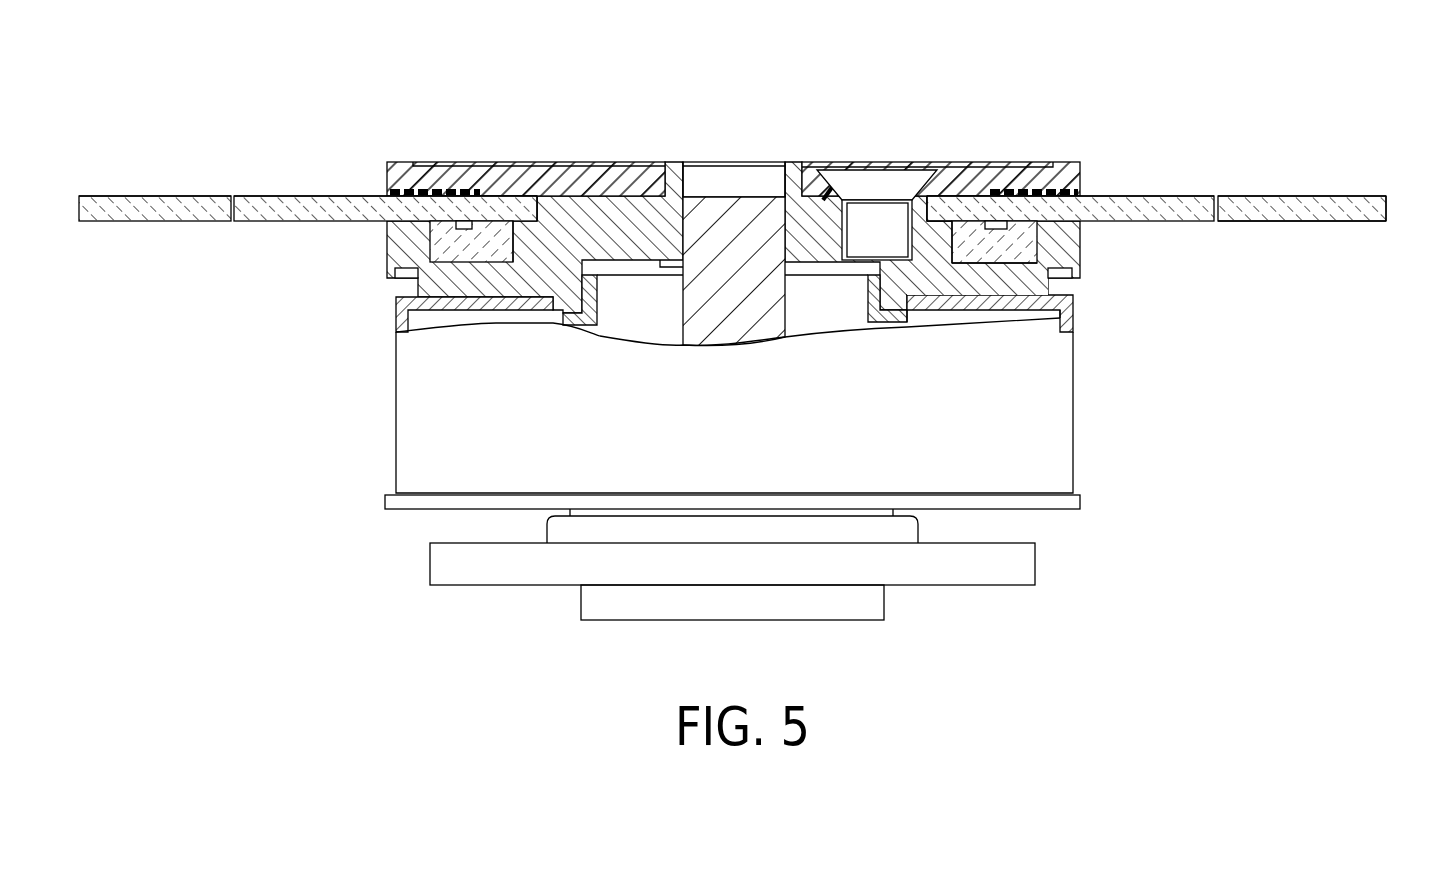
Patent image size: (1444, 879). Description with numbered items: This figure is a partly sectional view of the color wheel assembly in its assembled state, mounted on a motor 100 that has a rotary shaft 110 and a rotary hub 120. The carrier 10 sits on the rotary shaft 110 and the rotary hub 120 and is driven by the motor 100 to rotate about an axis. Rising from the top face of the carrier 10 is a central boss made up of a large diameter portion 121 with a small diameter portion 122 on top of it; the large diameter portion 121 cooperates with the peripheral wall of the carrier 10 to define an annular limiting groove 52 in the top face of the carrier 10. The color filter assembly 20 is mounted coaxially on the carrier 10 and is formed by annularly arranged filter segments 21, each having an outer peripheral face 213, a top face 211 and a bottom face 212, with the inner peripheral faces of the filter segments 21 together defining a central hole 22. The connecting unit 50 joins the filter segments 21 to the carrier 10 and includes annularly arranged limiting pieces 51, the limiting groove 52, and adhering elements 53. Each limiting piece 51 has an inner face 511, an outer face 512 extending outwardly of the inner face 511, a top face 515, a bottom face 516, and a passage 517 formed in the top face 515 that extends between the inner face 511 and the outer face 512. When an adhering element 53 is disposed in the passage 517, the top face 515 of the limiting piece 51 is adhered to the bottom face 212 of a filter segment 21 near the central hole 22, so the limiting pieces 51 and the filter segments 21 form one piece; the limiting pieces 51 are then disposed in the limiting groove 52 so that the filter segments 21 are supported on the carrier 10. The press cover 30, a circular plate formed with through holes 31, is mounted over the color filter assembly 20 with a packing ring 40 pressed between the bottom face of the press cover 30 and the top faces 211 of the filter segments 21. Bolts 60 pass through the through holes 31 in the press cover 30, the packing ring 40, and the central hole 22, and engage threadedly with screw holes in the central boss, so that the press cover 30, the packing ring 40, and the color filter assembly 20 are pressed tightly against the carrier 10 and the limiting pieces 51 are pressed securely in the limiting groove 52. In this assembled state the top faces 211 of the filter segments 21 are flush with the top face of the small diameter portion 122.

The carrier 10 is at (387, 243).
The color filter assembly 20 is at (1117, 185).
The filter segments 21 is at (161, 207).
The top face 211 is at (1245, 196).
The bottom face 212 is at (1353, 223).
The outer peripheral face 213 is at (1387, 210).
The central hole 22 is at (953, 205).
The press cover 30 is at (493, 162).
The through holes 31 is at (757, 165).
The packing ring 40 is at (387, 190).
The connecting unit 50 is at (992, 303).
The limiting pieces 51 is at (1037, 238).
The inner face 511 is at (955, 238).
The outer face 512 is at (1080, 262).
The top face 515 is at (975, 265).
The bottom face 516 is at (1005, 322).
The passage 517 is at (1060, 303).
The limiting groove 52 is at (473, 263).
The adhering elements 53 is at (468, 222).
The bolts 60 is at (870, 165).
The motor 100 is at (420, 517).
The rotary shaft 110 is at (748, 322).
The rotary hub 120 is at (480, 460).
The large diameter portion 121 is at (517, 247).
The small diameter portion 122 is at (538, 205).